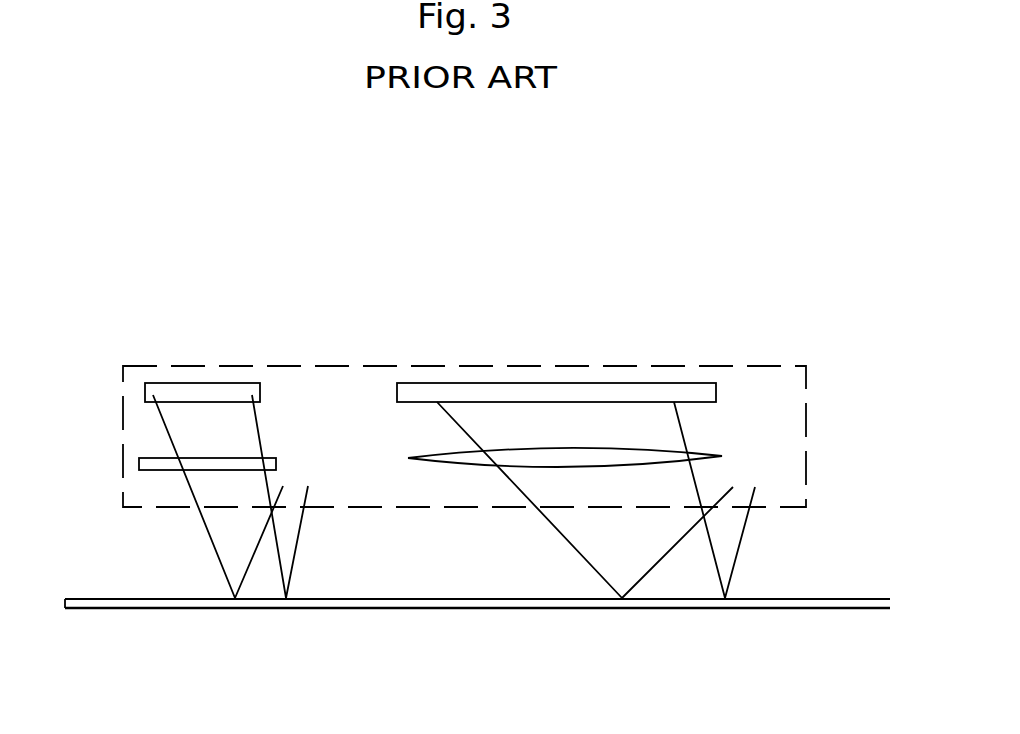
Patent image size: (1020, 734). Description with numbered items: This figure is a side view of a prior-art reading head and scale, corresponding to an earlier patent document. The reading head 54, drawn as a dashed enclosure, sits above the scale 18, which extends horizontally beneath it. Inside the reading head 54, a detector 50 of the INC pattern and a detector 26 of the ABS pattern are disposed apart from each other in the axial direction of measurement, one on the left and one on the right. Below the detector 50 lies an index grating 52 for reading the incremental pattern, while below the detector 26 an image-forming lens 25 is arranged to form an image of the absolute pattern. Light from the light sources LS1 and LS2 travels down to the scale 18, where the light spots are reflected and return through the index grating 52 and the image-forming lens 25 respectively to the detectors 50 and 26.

The scale 18 is at (93, 608).
The image-forming lens 25 is at (722, 456).
The detector of the ABS pattern 26 is at (658, 395).
The detector of the INC pattern 50 is at (235, 395).
The index grating 52 is at (157, 463).
The reading head 54 is at (427, 366).
The light source LS1 is at (281, 528).
The light source LS2 is at (697, 529).